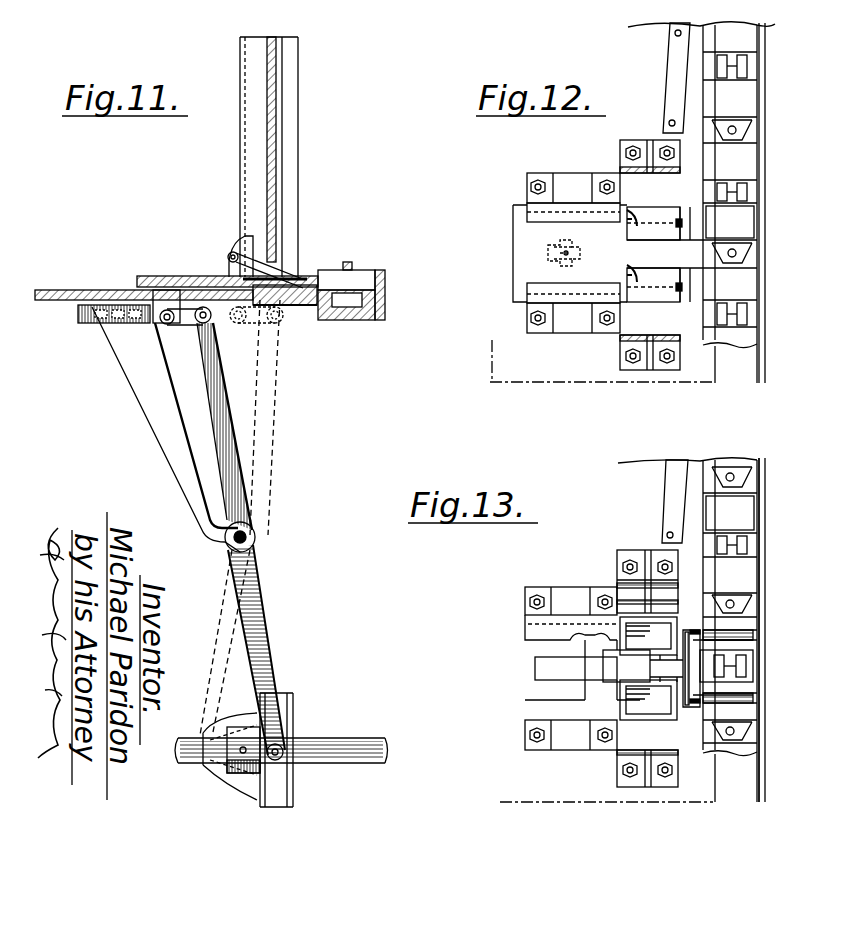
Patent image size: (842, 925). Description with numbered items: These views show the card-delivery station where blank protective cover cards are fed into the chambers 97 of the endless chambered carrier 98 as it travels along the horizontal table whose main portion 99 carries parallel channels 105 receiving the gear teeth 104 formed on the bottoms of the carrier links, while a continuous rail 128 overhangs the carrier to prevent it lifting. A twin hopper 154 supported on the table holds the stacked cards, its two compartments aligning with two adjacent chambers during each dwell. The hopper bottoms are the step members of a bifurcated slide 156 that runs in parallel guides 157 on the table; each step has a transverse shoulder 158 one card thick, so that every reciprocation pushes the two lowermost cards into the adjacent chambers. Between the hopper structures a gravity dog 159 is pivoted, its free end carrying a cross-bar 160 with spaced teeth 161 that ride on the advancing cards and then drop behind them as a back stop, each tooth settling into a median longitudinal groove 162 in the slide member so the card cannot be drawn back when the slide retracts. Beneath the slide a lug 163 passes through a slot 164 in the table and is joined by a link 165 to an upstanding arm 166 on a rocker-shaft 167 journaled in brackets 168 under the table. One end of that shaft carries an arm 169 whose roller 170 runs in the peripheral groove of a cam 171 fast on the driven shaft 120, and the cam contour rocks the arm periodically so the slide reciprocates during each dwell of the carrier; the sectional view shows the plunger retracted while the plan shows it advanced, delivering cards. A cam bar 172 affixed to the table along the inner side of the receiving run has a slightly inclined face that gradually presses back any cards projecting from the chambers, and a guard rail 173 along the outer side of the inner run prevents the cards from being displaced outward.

In FIG. 11, the chambers 97 is at (317, 300).
In FIG. 12, the chambers 97 is at (747, 224).
In FIG. 13, the chambers 97 is at (737, 510).
In FIG. 11, the endless carrier 98 is at (373, 275).
In FIG. 12, the endless carrier 98 is at (760, 134).
In FIG. 13, the endless carrier 98 is at (747, 655).
In FIG. 11, the main portion of table 99 is at (38, 302).
In FIG. 12, the main portion of table 99 is at (687, 383).
In FIG. 13, the main portion of table 99 is at (606, 659).
In FIG. 11, the gear teeth 104 is at (350, 307).
In FIG. 11, the parallel channels 105 is at (383, 308).
In FIG. 12, the parallel channels 105 is at (733, 33).
In FIG. 13, the parallel channels 105 is at (733, 467).
In FIG. 11, the shaft 120 is at (355, 755).
In FIG. 11, the continuous rail 128 is at (380, 270).
In FIG. 11, the twin hopper 154 is at (300, 140).
In FIG. 12, the twin hopper 154 is at (620, 340).
In FIG. 13, the twin hopper 154 is at (633, 717).
In FIG. 11, the bifurcated slide 156 is at (150, 250).
In FIG. 12, the bifurcated slide 156 is at (567, 252).
In FIG. 13, the bifurcated slide 156 is at (590, 688).
In FIG. 11, the parallel guides 157 is at (213, 270).
In FIG. 12, the parallel guides 157 is at (570, 173).
In FIG. 13, the parallel guides 157 is at (570, 590).
In FIG. 12, the transverse shoulders 158 is at (627, 278).
In FIG. 11, the gravity dog 159 is at (247, 262).
In FIG. 13, the gravity dog 159 is at (633, 667).
In FIG. 11, the cross-bar 160 is at (348, 262).
In FIG. 11, the spaced teeth 161 is at (248, 322).
In FIG. 13, the spaced teeth 161 is at (692, 640).
In FIG. 11, the median longitudinal groove 162 is at (253, 287).
In FIG. 12, the median longitudinal groove 162 is at (683, 222).
In FIG. 13, the median longitudinal groove 162 is at (747, 632).
In FIG. 11, the lug 163 is at (157, 300).
In FIG. 12, the lug 163 is at (537, 265).
In FIG. 11, the slot 164 is at (200, 277).
In FIG. 13, the slot 164 is at (535, 672).
In FIG. 11, the link 165 is at (180, 297).
In FIG. 12, the link 165 is at (537, 257).
In FIG. 11, the upstanding arm 166 is at (228, 378).
In FIG. 11, the rocker-shaft 167 is at (254, 526).
In FIG. 11, the brackets 168 is at (192, 443).
In FIG. 11, the arm 169 is at (262, 617).
In FIG. 11, the roller 170 is at (283, 748).
In FIG. 11, the cam 171 is at (284, 695).
In FIG. 12, the cam bar 172 is at (670, 47).
In FIG. 13, the cam bar 172 is at (672, 493).
In FIG. 13, the guard rail 173 is at (763, 558).